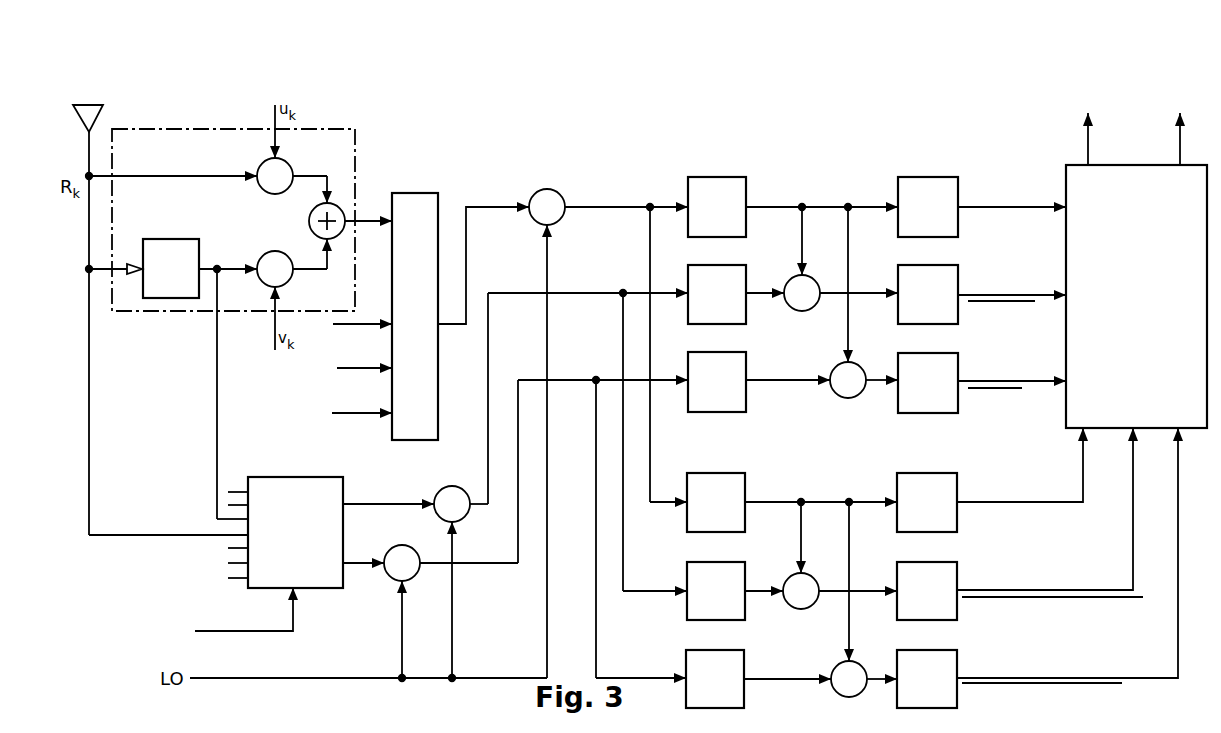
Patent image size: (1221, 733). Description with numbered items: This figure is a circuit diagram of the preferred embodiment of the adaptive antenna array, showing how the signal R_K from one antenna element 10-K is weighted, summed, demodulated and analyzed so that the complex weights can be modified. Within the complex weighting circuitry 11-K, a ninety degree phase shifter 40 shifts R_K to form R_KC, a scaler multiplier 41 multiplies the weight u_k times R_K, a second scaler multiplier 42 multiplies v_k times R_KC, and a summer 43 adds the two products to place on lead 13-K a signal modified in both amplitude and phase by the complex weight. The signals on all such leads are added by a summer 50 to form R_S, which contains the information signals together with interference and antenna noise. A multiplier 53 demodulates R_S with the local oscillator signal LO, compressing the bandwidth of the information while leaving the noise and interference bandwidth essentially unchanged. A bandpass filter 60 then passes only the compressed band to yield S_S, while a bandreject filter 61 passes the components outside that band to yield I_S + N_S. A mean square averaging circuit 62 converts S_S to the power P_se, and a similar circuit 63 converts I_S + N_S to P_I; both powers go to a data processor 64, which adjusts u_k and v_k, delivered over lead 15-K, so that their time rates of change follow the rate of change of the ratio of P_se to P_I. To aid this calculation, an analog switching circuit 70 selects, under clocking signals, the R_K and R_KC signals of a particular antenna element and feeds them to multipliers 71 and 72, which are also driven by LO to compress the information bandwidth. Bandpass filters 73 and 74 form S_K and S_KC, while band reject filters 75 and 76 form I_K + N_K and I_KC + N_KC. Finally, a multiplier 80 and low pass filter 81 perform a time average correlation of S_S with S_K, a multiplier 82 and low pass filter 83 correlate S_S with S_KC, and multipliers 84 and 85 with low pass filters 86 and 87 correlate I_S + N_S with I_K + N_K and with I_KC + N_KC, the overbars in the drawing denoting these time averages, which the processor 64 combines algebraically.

The antenna element 10-K is at (103, 113).
The complex multiplier 11-K is at (355, 132).
The lead 13-K is at (362, 220).
The complex weight lead 15-K is at (1180, 147).
The 90 degree phase shifter 40 is at (172, 239).
The scaler multiplier 41 is at (258, 166).
The scaler multiplier 42 is at (280, 240).
The summer 43 is at (310, 216).
The summer 50 is at (435, 193).
The multiplier 53 is at (549, 189).
The bandpass filter 60 is at (716, 177).
The bandreject filter 61 is at (700, 473).
The mean square averaging circuit 62 is at (925, 177).
The mean square averaging circuit 63 is at (917, 472).
The data processor 64 is at (1064, 172).
The analog switching circuit 70 is at (283, 477).
The multiplier 71 is at (398, 548).
The multiplier 72 is at (446, 488).
The bandpass filter 73 is at (698, 352).
The bandpass filter 74 is at (699, 264).
The band reject filter 75 is at (697, 650).
The band reject filter 76 is at (698, 562).
The multiplier 80 is at (838, 366).
The low pass filter 81 is at (918, 353).
The multiplier 82 is at (790, 280).
The low pass filter 83 is at (920, 265).
The multiplier 84 is at (834, 666).
The multiplier 85 is at (790, 579).
The low pass filter 86 is at (912, 650).
The low pass filter 87 is at (910, 562).